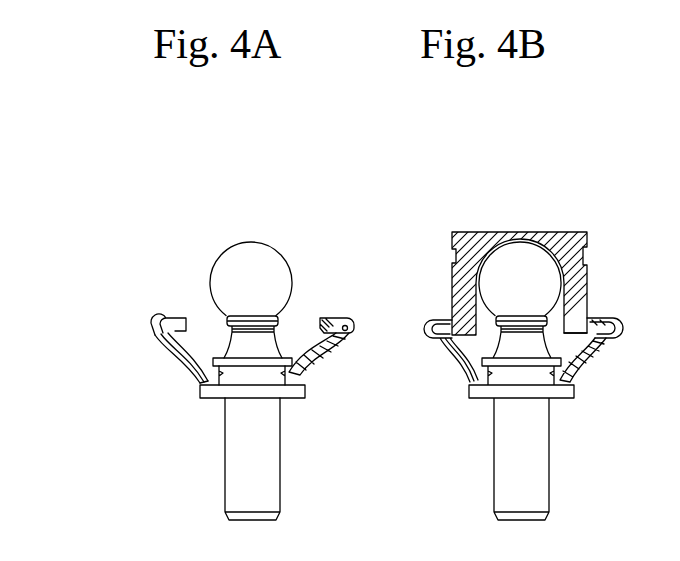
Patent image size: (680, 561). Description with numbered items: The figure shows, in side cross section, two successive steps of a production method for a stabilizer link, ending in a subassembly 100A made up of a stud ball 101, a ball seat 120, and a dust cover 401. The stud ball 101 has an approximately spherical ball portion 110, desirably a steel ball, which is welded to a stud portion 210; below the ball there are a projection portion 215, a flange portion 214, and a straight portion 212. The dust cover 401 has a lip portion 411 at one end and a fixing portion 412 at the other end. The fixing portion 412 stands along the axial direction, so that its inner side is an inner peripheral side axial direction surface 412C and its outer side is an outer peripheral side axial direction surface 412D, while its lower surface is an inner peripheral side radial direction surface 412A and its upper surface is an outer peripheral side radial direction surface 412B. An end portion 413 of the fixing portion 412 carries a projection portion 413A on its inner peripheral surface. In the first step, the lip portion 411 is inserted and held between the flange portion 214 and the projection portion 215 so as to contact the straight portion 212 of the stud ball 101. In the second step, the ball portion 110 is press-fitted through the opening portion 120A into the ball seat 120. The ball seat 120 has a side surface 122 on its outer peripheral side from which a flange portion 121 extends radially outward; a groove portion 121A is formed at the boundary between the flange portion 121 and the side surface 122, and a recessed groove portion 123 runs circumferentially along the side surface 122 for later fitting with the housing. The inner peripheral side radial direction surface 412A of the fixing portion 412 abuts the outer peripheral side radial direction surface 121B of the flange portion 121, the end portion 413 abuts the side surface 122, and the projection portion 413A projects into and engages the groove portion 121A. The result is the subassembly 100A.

In FIG. 4B, the subassembly 100A is at (515, 321).
In FIG. 4A, the stud ball 101 is at (264, 360).
In FIG. 4B, the stud ball 101 is at (555, 353).
In FIG. 4A, the ball portion 110 is at (250, 268).
In FIG. 4B, the ball portion 110 is at (520, 265).
In FIG. 4B, the ball seat 120 is at (507, 307).
In FIG. 4B, the opening portion 120A is at (583, 360).
In FIG. 4B, the flange portion 121 is at (452, 330).
In FIG. 4B, the groove portion 121A is at (452, 347).
In FIG. 4B, the outer peripheral side radial direction surface 121B is at (435, 345).
In FIG. 4B, the side surface 122 is at (452, 275).
In FIG. 4B, the groove portion 123 is at (588, 247).
In FIG. 4A, the stud portion 210 is at (237, 478).
In FIG. 4A, the straight portion 212 is at (217, 398).
In FIG. 4A, the flange portion 214 is at (293, 400).
In FIG. 4A, the projection portion 215 is at (226, 338).
In FIG. 4A, the dust cover 401 is at (257, 334).
In FIG. 4B, the dust cover 401 is at (522, 287).
In FIG. 4A, the lip portion 411 is at (290, 394).
In FIG. 4B, the lip portion 411 is at (576, 399).
In FIG. 4A, the fixing portion 412 is at (353, 312).
In FIG. 4B, the fixing portion 412 is at (620, 263).
In FIG. 4A, the inner peripheral side radial direction surface 412A is at (237, 377).
In FIG. 4B, the inner peripheral side radial direction surface 412A is at (428, 322).
In FIG. 4A, the outer peripheral side radial direction surface 412B is at (172, 318).
In FIG. 4A, the inner peripheral side axial direction surface 412C is at (350, 330).
In FIG. 4A, the outer peripheral side axial direction surface 412D is at (157, 340).
In FIG. 4A, the end portion 413 is at (320, 322).
In FIG. 4B, the end portion 413 is at (596, 328).
In FIG. 4A, the projection portion 413A is at (335, 345).
In FIG. 4B, the projection portion 413A is at (605, 332).